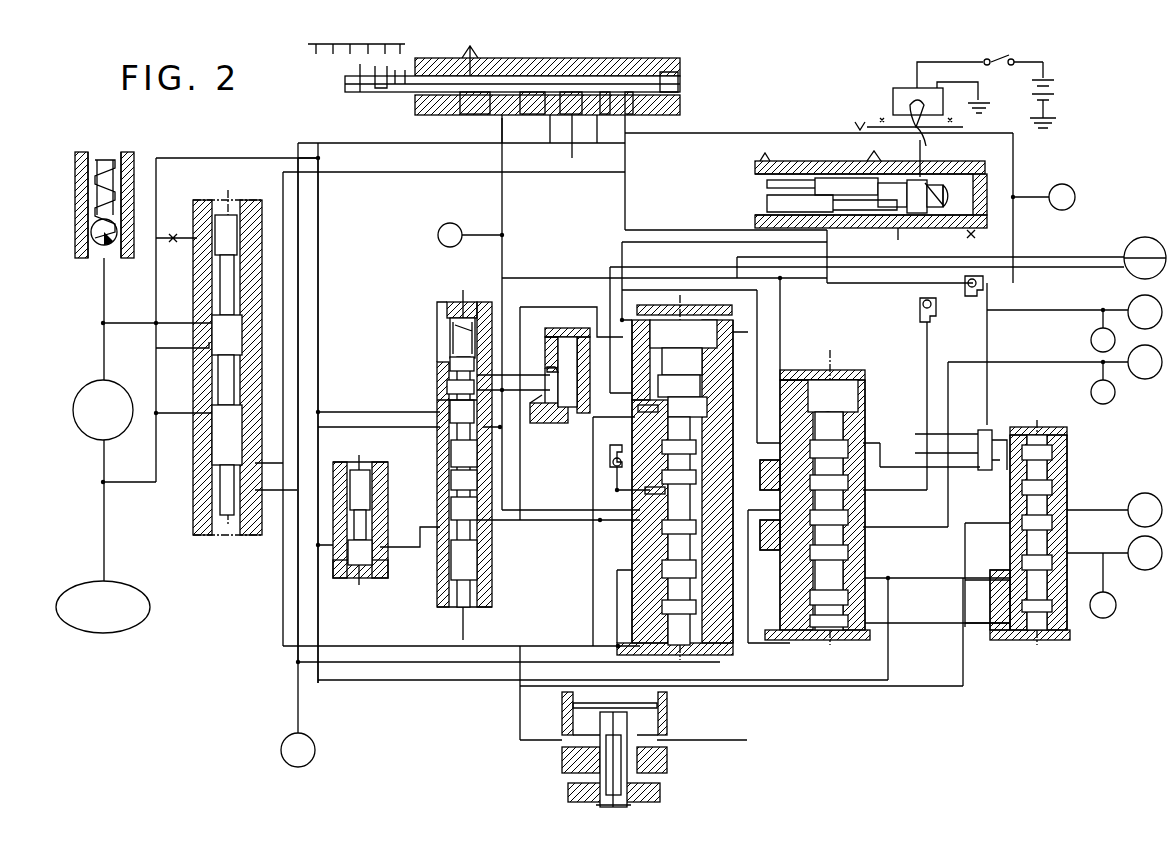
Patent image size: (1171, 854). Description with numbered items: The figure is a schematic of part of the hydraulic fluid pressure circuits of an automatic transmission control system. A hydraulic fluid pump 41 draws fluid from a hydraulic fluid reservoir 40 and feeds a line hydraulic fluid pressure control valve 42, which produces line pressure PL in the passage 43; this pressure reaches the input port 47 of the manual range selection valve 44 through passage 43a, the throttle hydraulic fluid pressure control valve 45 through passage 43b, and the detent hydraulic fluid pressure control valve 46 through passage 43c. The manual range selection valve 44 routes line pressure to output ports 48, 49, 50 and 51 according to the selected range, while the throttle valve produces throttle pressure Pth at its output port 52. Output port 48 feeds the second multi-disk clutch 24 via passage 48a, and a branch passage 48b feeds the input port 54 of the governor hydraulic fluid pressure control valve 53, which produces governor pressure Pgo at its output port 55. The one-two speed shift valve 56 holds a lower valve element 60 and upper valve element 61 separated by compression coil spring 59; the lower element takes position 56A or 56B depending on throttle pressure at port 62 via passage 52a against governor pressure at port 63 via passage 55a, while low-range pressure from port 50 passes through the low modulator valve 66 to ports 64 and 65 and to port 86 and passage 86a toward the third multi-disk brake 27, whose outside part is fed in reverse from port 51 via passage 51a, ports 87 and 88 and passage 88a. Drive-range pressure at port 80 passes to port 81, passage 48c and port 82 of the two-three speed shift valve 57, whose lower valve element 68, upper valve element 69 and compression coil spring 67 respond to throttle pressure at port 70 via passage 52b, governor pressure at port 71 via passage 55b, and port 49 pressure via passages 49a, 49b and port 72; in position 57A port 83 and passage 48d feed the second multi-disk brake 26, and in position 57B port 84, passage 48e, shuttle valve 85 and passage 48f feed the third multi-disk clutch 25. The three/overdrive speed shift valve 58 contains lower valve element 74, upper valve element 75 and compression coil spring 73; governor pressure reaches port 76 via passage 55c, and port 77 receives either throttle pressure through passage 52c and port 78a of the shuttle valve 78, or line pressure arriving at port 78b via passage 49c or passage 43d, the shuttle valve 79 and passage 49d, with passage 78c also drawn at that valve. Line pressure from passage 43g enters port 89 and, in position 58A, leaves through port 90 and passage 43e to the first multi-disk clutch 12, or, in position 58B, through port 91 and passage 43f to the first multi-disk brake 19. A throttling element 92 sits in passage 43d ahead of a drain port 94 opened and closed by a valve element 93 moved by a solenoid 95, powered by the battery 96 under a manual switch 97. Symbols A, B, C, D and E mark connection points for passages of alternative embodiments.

The first multi-disk clutch 12 is at (1145, 510).
The first multi-disk brake 19 is at (1114, 553).
The second multi-disk clutch 24 is at (298, 713).
The third multi-disk clutch 25 is at (1074, 312).
The second multi-disk brake 26 is at (1055, 362).
The third multi-disk brake 27 is at (888, 258).
The hydraulic fluid reservoir 40 is at (150, 603).
The hydraulic fluid pump 41 is at (76, 423).
The line hydraulic fluid pressure control valve 42 is at (243, 200).
The passage 43 is at (240, 157).
The passage 43a is at (375, 158).
The passage 43b is at (318, 238).
The passage 43c is at (319, 434).
The passage 43d is at (730, 133).
The passage 43e is at (1098, 510).
The passage 43f is at (1104, 563).
The passage 43g is at (928, 686).
The manual range selection valve 44 is at (533, 60).
The throttle hydraulic fluid pressure control valve 45 is at (451, 298).
The detent hydraulic fluid pressure control valve 46 is at (386, 462).
The input port 47 is at (570, 122).
The output port 48 is at (548, 120).
The passage 48a is at (298, 287).
The passage 48b is at (411, 662).
The passage 48c is at (748, 522).
The passage 48d is at (948, 527).
The passage 48e is at (929, 487).
The passage 48f is at (1072, 310).
The output port 49 is at (500, 122).
The passage 49a is at (502, 206).
The passage 49b is at (780, 316).
The passage 49c is at (870, 283).
The passage 49d is at (987, 345).
The output port 50 is at (596, 121).
The output port 51 is at (632, 115).
The passage 51a is at (407, 172).
The output port 52 is at (489, 430).
The passage 52a is at (560, 510).
The passage 52b is at (757, 381).
The passage 52c is at (965, 468).
The governor hydraulic fluid pressure control valve 53 is at (560, 767).
The input port 54 is at (660, 767).
The output port 55 is at (664, 720).
The passage 55a is at (749, 616).
The passage 55b is at (752, 578).
The passage 55c is at (925, 608).
The 1/2 speed shift valve 56 is at (689, 313).
The downwardly biased position 56A is at (616, 646).
The upwardly biased position 56B is at (678, 674).
The 2/3 speed shift valve 57 is at (840, 370).
The downwardly shifted position 57A is at (801, 640).
The upwardly shifted position 57B is at (844, 640).
The 3/OD speed shift valve 58 is at (1044, 427).
The downward position 58A is at (1020, 645).
The upward position 58B is at (1052, 645).
The compression coil spring 59 is at (696, 445).
The lower valve element 60 is at (696, 490).
The upper valve element 61 is at (714, 358).
The port 62 is at (645, 497).
The port 63 is at (705, 657).
The port 64 is at (626, 320).
The port 65 is at (625, 350).
The low modulator valve 66 is at (746, 181).
The compression coil spring 67 is at (850, 419).
The lower valve element 68 is at (854, 512).
The upper valve element 69 is at (854, 389).
The port 70 is at (761, 443).
The port 71 is at (761, 642).
The port 72 is at (790, 378).
The compression coil spring 73 is at (1059, 463).
The lower valve element 74 is at (1067, 518).
The upper valve element 75 is at (1058, 442).
The port 76 is at (998, 640).
The port 77 is at (1004, 439).
The shuttle valve 78 is at (992, 464).
The port 78a is at (917, 455).
The port 78b is at (983, 432).
The passage 78c is at (917, 436).
The shuttle valve 79 is at (992, 288).
The port 80 is at (640, 572).
The port 81 is at (710, 577).
The port 82 is at (773, 478).
The port 83 is at (856, 530).
The port 84 is at (854, 491).
The shuttle valve 85 is at (936, 326).
The port 86 is at (717, 337).
The passage 86a is at (737, 260).
The port 87 is at (636, 408).
The port 88 is at (633, 385).
The passage 88a is at (675, 262).
The port 89 is at (1010, 523).
The port 90 is at (1067, 491).
The port 91 is at (1067, 553).
The throttling element 92 is at (853, 130).
The valve element 93 is at (914, 104).
The drain port 94 is at (926, 132).
The solenoid 95 is at (893, 98).
The battery 96 is at (1060, 90).
The manual switch 97 is at (998, 60).
The connection point A is at (1043, 208).
The connection point B is at (1103, 605).
The connection point C is at (1103, 331).
The connection point D is at (471, 235).
The connection point E is at (1103, 383).
The line pressure PL is at (187, 156).
The throttle pressure Pth is at (502, 507).
The governor pressure Pgo is at (698, 746).